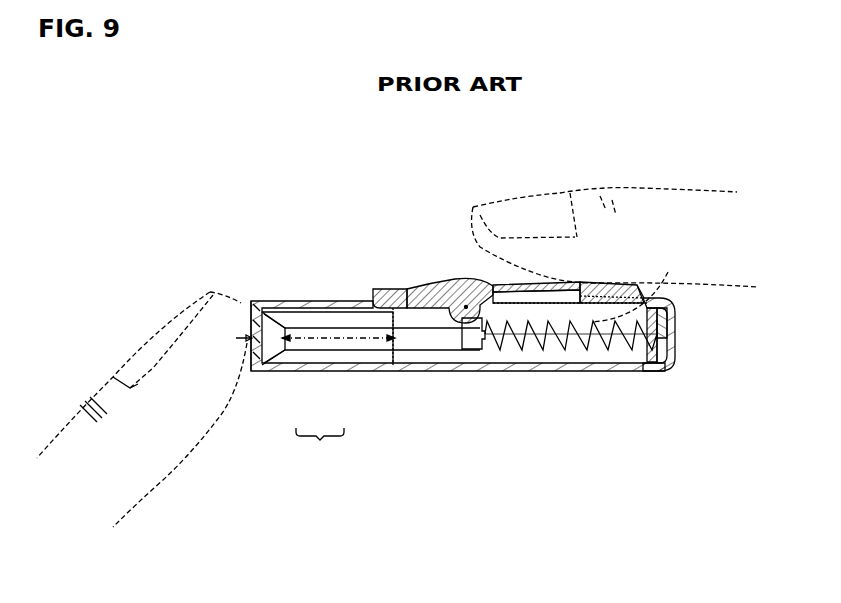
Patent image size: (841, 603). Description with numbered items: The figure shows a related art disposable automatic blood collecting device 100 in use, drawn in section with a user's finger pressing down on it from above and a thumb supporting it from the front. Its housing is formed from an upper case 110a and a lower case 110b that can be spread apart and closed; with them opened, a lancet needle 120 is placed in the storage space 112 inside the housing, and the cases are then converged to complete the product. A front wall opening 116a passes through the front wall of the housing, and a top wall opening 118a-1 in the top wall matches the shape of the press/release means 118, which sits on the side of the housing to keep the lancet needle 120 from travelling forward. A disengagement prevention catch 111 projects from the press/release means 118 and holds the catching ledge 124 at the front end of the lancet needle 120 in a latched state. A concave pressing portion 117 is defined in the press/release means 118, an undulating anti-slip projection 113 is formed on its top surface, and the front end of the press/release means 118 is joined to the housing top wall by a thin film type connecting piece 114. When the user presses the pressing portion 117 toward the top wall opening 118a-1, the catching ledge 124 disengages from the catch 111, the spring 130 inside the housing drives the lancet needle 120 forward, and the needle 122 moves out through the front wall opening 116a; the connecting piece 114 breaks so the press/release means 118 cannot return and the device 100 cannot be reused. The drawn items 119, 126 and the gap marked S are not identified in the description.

The disposable automatic blood collecting device 100 is at (336, 268).
The upper case 110a is at (292, 373).
The lower case 110b is at (334, 373).
The disengagement prevention catch 111 is at (411, 290).
The storage space 112 is at (533, 350).
The anti-slip projection 113 is at (615, 283).
The thin film type connecting piece 114 is at (373, 296).
The front wall opening 116a is at (255, 374).
The pressing portion 117 is at (632, 284).
The press/release means 118 is at (532, 284).
The top wall opening 118a-1 is at (657, 280).
The end cap 119 is at (668, 314).
The lancet needle 120 is at (445, 347).
The needle 122 is at (247, 313).
The catching ledge 124 is at (263, 313).
The spring seat block 126 is at (472, 350).
The spring 130 is at (632, 351).
The gap S is at (466, 306).